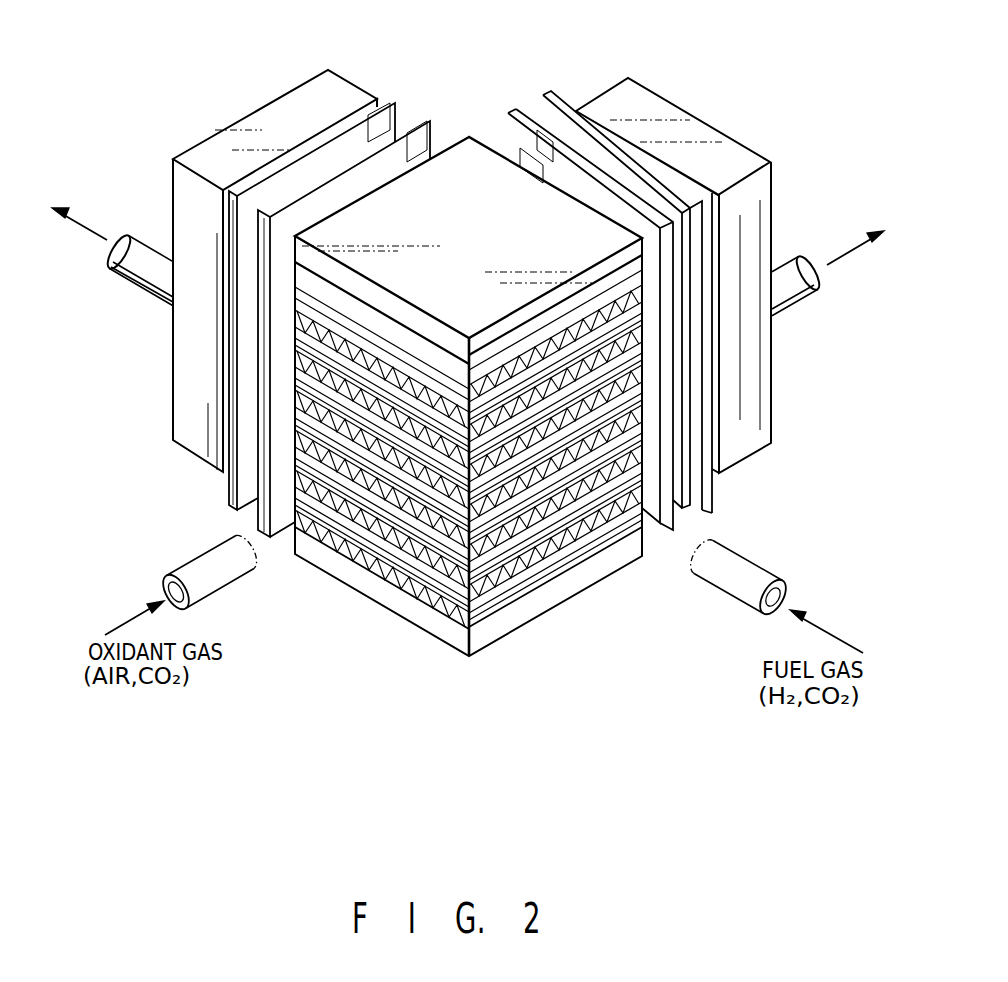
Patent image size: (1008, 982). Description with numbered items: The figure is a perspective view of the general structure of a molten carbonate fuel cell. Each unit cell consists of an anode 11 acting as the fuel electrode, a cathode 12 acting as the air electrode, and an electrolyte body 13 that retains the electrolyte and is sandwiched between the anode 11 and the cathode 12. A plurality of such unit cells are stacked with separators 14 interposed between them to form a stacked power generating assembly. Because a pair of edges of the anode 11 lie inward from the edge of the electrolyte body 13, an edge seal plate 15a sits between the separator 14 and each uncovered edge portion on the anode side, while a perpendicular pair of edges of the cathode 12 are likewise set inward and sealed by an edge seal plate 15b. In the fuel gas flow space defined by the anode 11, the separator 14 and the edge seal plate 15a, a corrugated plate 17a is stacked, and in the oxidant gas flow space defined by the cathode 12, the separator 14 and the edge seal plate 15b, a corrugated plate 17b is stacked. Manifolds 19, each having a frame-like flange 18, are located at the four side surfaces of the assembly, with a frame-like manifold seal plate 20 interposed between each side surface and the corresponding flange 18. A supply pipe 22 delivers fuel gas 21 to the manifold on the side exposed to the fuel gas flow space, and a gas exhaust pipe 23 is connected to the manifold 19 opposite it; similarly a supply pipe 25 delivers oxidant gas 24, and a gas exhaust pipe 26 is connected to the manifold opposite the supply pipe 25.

The anode 11 is at (560, 541).
The cathode 12 is at (417, 576).
The electrolyte body 13 is at (537, 551).
The separator 14 is at (525, 563).
The edge seal plate 15a is at (496, 574).
The edge seal plate 15b is at (301, 529).
The corrugated plate 17a is at (587, 521).
The corrugated plate 17b is at (383, 569).
The frame-like flange 18 is at (401, 94).
The manifold 19 is at (343, 92).
The frame-like manifold seal plate 20 is at (434, 111).
The fuel gas 21 is at (832, 632).
The supply pipe 22 is at (758, 577).
The gas exhaust pipe 23 is at (153, 271).
The oxidant gas 24 is at (130, 618).
The supply pipe 25 is at (198, 565).
The gas exhaust pipe 26 is at (798, 286).